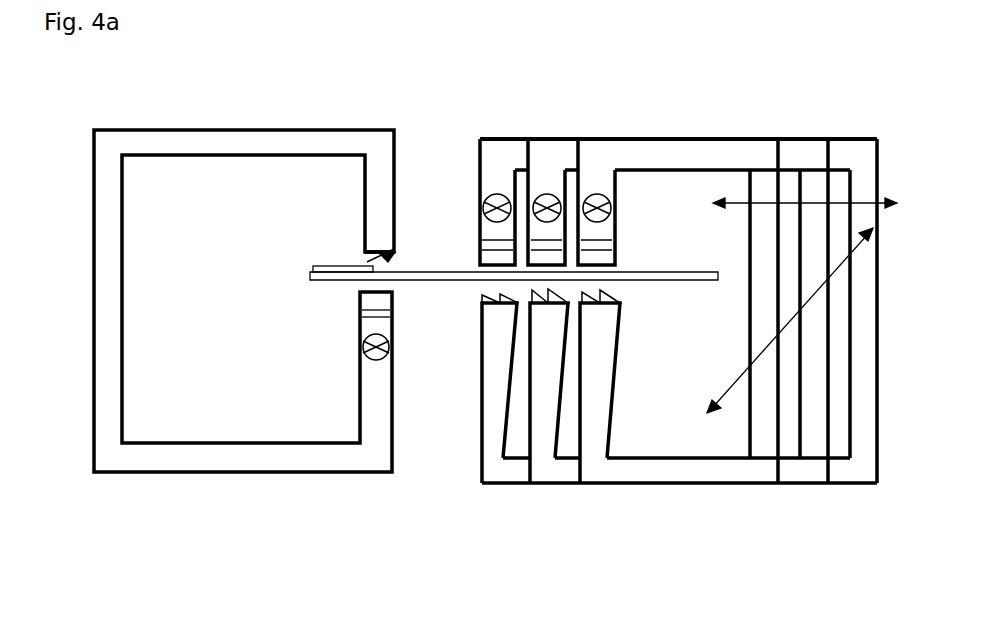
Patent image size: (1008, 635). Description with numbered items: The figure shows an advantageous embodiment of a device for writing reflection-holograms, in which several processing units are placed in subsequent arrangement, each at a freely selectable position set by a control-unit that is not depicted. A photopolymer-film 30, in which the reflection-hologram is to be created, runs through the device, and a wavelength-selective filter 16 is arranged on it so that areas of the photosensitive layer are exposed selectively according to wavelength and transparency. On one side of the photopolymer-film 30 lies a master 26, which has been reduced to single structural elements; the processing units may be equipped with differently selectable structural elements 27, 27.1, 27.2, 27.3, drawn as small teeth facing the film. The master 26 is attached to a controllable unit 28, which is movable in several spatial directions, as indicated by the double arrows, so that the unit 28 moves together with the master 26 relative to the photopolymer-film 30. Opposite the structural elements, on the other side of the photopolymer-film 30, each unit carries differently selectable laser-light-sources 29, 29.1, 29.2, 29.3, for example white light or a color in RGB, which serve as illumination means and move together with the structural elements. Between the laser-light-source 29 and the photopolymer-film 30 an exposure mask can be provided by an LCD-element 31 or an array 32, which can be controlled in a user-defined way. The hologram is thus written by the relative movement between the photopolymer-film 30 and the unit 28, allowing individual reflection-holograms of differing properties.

The wavelength-selective filter 16 is at (350, 267).
The master 26 is at (497, 313).
The structural element 27 is at (487, 295).
The structural element 27.1 is at (548, 308).
The structural element 27.2 is at (620, 300).
The structural element 27.3 is at (443, 257).
The controllable unit 28 is at (635, 335).
The laser-light-source 29 is at (495, 197).
The laser-light-source 29.1 is at (547, 200).
The laser-light-source 29.2 is at (598, 205).
The laser-light-source 29.3 is at (367, 348).
The photopolymer-film 30 is at (345, 281).
The LCD-element 31 is at (457, 202).
The array 32 is at (476, 235).